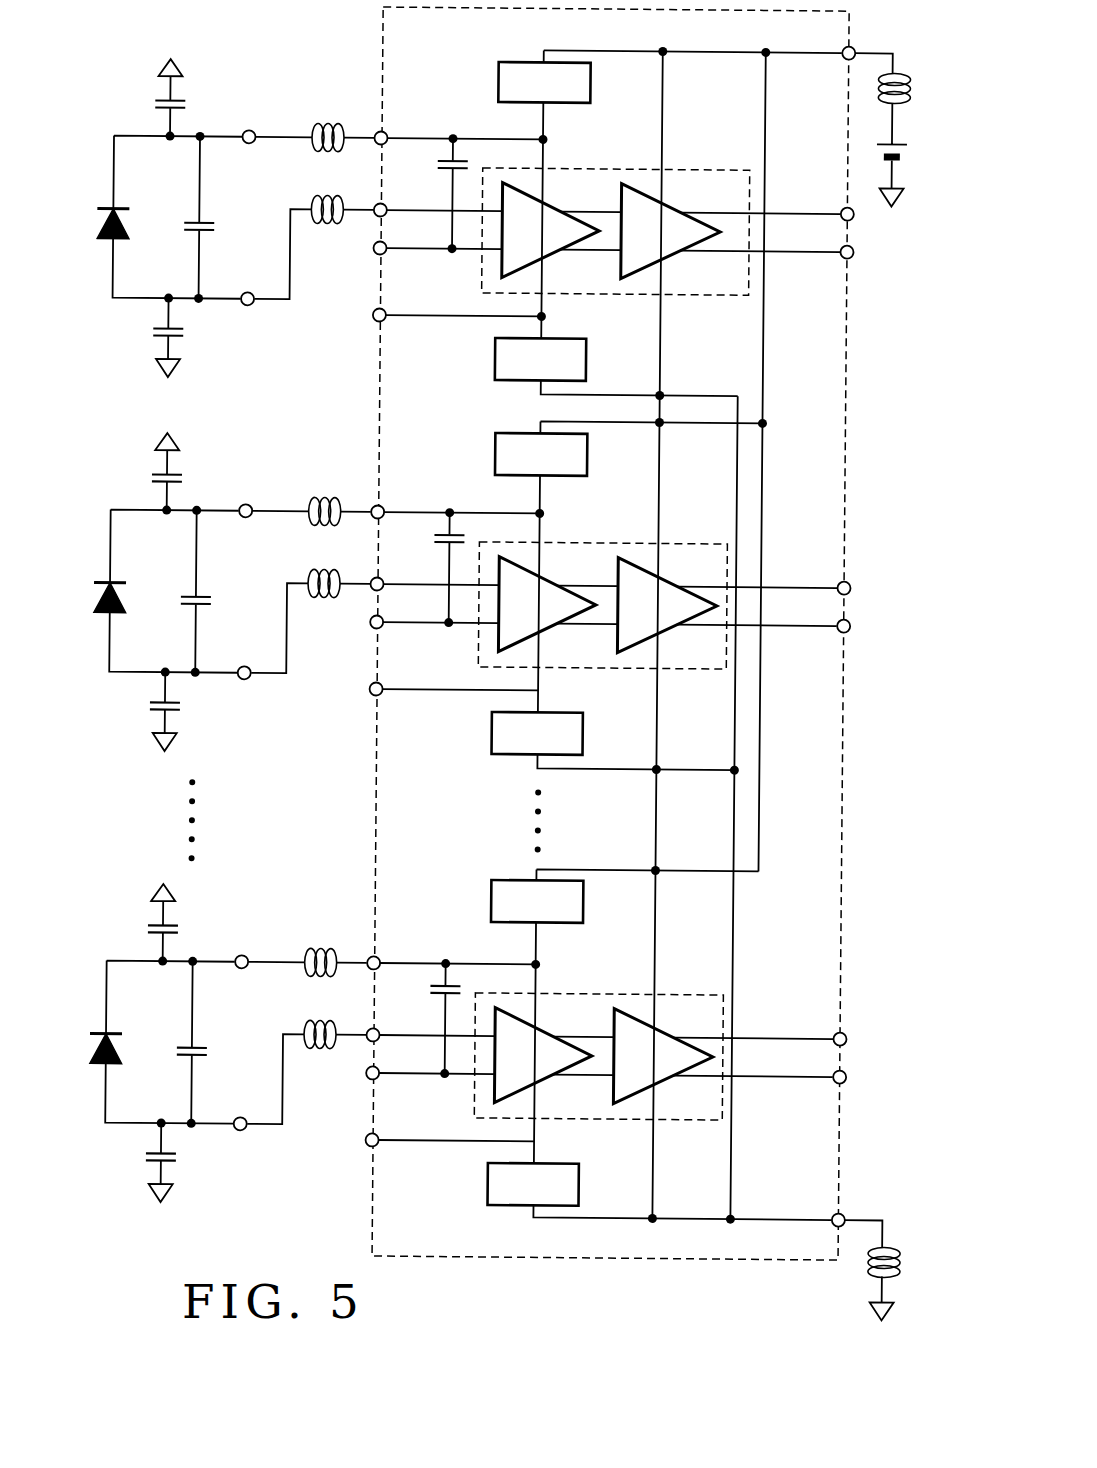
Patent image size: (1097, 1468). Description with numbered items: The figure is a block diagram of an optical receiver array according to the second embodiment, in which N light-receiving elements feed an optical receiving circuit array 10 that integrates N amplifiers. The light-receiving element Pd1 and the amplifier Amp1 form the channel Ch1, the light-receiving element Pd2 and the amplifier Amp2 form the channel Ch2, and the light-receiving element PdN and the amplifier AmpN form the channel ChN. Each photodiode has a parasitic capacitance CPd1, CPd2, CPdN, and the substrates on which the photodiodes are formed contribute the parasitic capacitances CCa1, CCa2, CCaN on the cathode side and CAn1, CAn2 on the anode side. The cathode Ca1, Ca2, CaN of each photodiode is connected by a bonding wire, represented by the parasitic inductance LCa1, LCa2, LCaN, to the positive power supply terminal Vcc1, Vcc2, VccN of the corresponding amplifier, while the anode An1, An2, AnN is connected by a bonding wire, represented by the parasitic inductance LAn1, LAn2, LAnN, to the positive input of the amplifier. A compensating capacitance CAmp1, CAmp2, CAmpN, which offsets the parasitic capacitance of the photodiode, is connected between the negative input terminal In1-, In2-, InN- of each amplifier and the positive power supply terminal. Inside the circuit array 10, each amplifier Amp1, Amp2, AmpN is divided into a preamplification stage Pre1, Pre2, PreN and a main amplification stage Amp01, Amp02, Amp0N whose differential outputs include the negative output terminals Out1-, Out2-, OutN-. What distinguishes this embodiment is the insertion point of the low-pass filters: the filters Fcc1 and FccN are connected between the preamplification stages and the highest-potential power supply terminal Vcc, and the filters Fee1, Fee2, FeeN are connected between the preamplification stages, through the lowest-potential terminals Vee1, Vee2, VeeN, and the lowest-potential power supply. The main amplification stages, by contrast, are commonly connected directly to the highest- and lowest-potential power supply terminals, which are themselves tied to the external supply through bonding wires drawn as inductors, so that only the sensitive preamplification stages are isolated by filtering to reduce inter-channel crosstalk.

The optical receiving circuit array 10 is at (382, 23).
The highest-potential power supply terminal Vcc is at (726, 111).
The channel Ch1 is at (93, 146).
The light-receiving element Pd1 is at (125, 208).
The parasitic capacitance CPd1 is at (223, 217).
The parasitic capacitance CCa1 is at (146, 98).
The parasitic capacitance CAn1 is at (142, 338).
The cathode Ca1 is at (232, 121).
The anode An1 is at (229, 284).
The parasitic inductance LCa1 is at (326, 117).
The parasitic inductance LAn1 is at (329, 226).
The positive power supply terminal Vcc1 is at (402, 125).
The negative input terminal In1- is at (404, 262).
The negative power supply terminal Vee1 is at (403, 302).
The capacitance CAmp1 is at (503, 140).
The low-pass filter Fcc1 is at (544, 82).
The low-pass filter Fee1 is at (540, 359).
The amplifier Amp1 is at (616, 215).
The preamplification stage Pre1 is at (551, 231).
The main amplification stage Amp01 is at (671, 232).
The negative output terminal Out1- is at (822, 265).
The channel Ch2 is at (93, 497).
The light-receiving element Pd2 is at (122, 582).
The parasitic capacitance CPd2 is at (219, 591).
The parasitic capacitance CCa2 is at (143, 472).
The parasitic capacitance CAn2 is at (139, 712).
The cathode Ca2 is at (229, 495).
The anode An2 is at (225, 658).
The parasitic inductance LCa2 is at (323, 491).
The parasitic inductance LAn2 is at (326, 600).
The positive power supply terminal Vcc2 is at (399, 499).
The negative input terminal In2- is at (401, 636).
The negative power supply terminal Vee2 is at (400, 676).
The capacitance CAmp2 is at (503, 514).
The low-pass filter Fee2 is at (537, 733).
The amplifier Amp2 is at (602, 589).
The preamplification stage Pre2 is at (547, 605).
The main amplification stage Amp02 is at (667, 606).
The negative output terminal Out2- is at (818, 639).
The channel ChN is at (96, 905).
The light-receiving element PdN is at (120, 1034).
The parasitic capacitance CPdN is at (132, 1162).
The parasitic capacitance CCaN is at (139, 923).
The cathode CaN is at (225, 946).
The anode AnN is at (221, 1109).
The parasitic inductance LCaN is at (321, 942).
The parasitic inductance LAnN is at (323, 1051).
The positive power supply terminal VccN is at (396, 950).
The negative input terminal InN- is at (399, 1087).
The negative power supply terminal VeeN is at (398, 1127).
The capacitance CAmpN is at (503, 965).
The low-pass filter FccN is at (537, 901).
The low-pass filter FeeN is at (533, 1184).
The amplifier AmpN is at (598, 1040).
The preamplification stage PreN is at (543, 1056).
The main amplification stage Amp0N is at (663, 1057).
The negative output terminal OutN- is at (814, 1090).